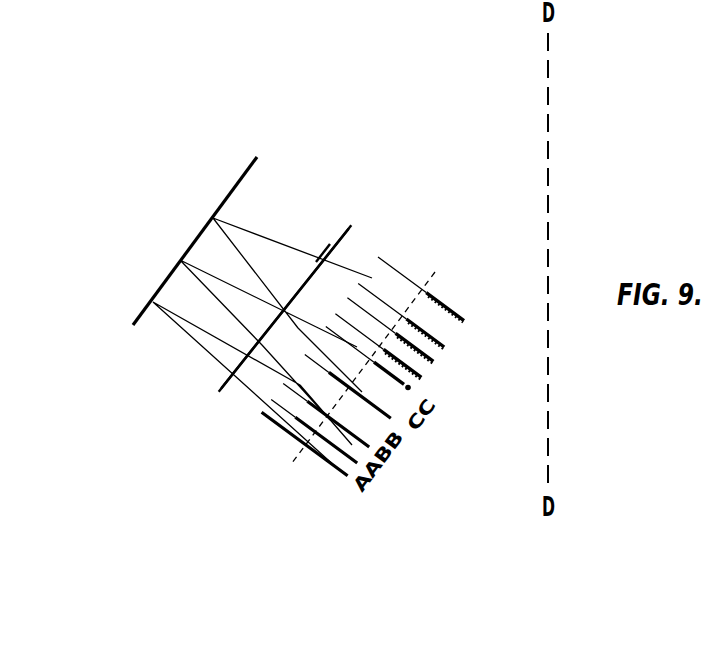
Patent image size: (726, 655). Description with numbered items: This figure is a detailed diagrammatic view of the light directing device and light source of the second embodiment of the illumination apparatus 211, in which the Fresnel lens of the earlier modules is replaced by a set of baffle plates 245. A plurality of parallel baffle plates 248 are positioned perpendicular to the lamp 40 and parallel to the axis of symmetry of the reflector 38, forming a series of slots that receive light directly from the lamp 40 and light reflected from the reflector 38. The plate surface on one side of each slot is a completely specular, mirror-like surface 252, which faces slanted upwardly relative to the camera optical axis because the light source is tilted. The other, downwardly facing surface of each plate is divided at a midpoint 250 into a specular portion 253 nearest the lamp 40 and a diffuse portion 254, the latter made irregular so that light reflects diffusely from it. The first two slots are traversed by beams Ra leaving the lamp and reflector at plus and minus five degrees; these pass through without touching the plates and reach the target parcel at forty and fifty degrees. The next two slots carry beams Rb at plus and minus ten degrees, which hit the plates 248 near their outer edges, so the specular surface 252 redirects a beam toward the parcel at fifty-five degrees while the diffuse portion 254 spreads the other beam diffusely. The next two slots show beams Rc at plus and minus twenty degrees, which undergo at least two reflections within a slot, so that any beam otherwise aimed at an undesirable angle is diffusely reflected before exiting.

The reflector 38 is at (252, 165).
The lamp 40 is at (342, 228).
The specular portion 253 is at (318, 253).
The specular surface 252 is at (376, 278).
The baffle plate 248 is at (409, 276).
The midpoint 250 is at (433, 278).
The diffuse portion 254 is at (449, 331).
The illumination apparatus 211 is at (110, 432).
The set of baffle plates 245 is at (355, 339).
The beams Ra is at (360, 490).
The beams Rb is at (404, 463).
The beams Rc is at (415, 425).